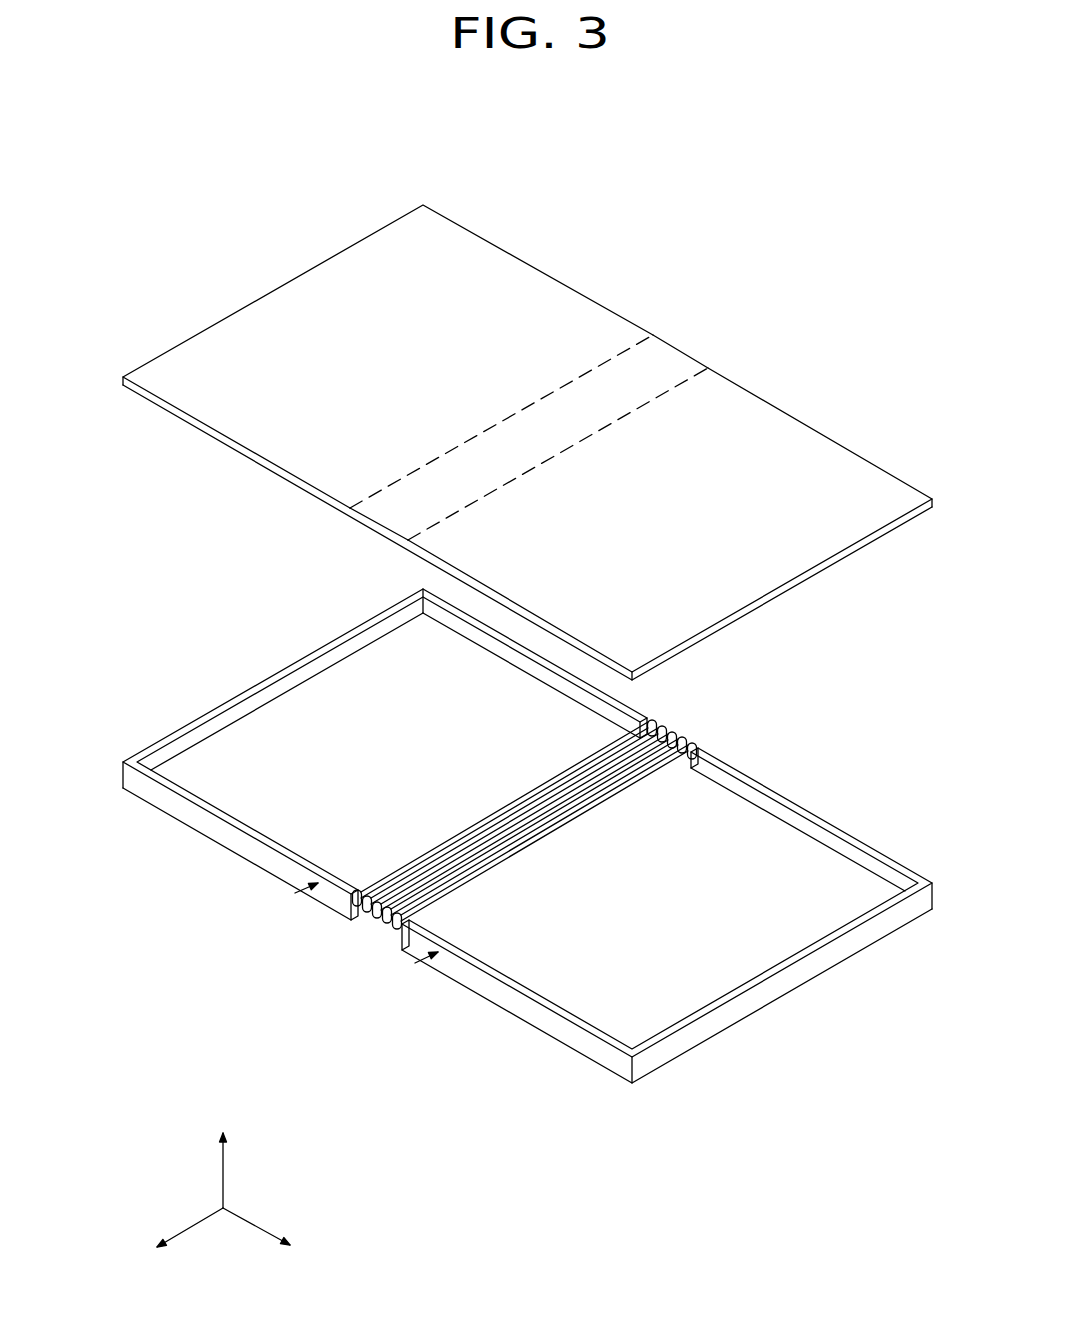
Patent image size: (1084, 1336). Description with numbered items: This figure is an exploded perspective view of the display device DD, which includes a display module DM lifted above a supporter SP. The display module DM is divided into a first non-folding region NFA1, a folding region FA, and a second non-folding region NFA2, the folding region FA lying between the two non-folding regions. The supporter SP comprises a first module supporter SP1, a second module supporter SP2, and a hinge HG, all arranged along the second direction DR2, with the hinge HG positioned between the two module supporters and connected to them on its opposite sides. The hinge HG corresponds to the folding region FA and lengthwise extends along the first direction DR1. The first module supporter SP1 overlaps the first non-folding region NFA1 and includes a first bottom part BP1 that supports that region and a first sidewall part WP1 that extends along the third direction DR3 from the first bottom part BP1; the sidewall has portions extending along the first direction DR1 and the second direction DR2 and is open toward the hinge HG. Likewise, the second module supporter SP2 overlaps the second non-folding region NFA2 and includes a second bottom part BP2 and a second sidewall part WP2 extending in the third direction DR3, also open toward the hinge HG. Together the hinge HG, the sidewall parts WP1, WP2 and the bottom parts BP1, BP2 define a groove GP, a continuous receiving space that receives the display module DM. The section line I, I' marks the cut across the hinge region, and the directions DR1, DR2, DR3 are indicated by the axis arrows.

The display device DD is at (833, 273).
The display module DM is at (813, 587).
The first non-folding region NFA1 is at (520, 280).
The folding region FA is at (667, 363).
The second non-folding region NFA2 is at (808, 448).
The supporter SP is at (807, 987).
The first module supporter SP1 is at (180, 925).
The second module supporter SP2 is at (488, 1100).
The first sidewall part WP1 is at (178, 803).
The second sidewall part WP2 is at (480, 980).
The first bottom part BP1 is at (290, 823).
The second bottom part BP2 is at (593, 998).
The hinge HG is at (400, 930).
The groove GP is at (698, 988).
The section line I is at (300, 896).
The section line I' is at (418, 967).
The first direction DR1 is at (169, 1235).
The second direction DR2 is at (280, 1235).
The third direction DR3 is at (224, 1157).